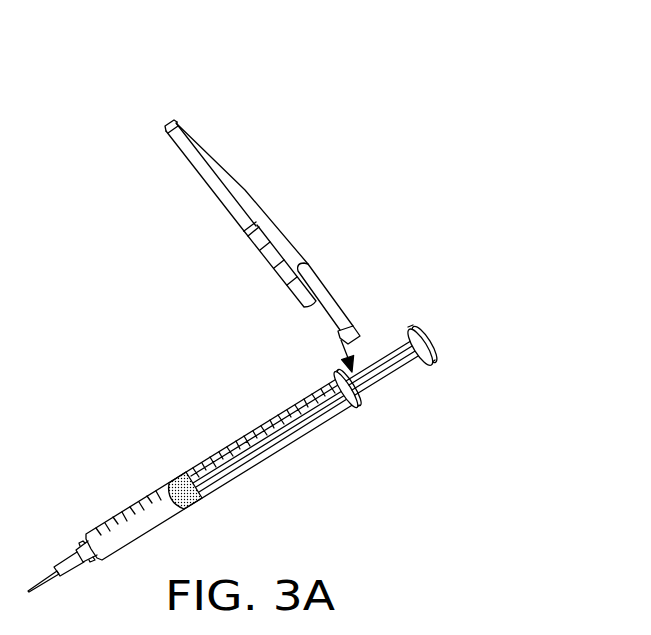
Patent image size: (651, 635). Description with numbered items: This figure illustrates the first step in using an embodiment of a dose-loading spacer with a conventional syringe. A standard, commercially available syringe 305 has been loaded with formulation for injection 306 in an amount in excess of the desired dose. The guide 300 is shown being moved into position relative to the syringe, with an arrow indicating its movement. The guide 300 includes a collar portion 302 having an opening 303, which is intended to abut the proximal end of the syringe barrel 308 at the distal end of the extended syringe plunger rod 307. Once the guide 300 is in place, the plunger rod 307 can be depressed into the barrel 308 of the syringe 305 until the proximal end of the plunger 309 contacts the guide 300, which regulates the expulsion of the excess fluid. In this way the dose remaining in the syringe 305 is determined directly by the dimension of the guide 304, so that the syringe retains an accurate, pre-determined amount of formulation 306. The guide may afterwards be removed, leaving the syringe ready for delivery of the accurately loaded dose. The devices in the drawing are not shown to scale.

The guide 300 is at (253, 246).
The collar portion 302 is at (193, 157).
The opening 303 is at (315, 307).
The dimension of the guide 304 is at (340, 300).
The syringe 305 is at (276, 448).
The formulation for injection 306 is at (110, 518).
The plunger rod 307 is at (403, 377).
The syringe barrel 308 is at (362, 398).
The proximal end of the plunger 309 is at (419, 340).